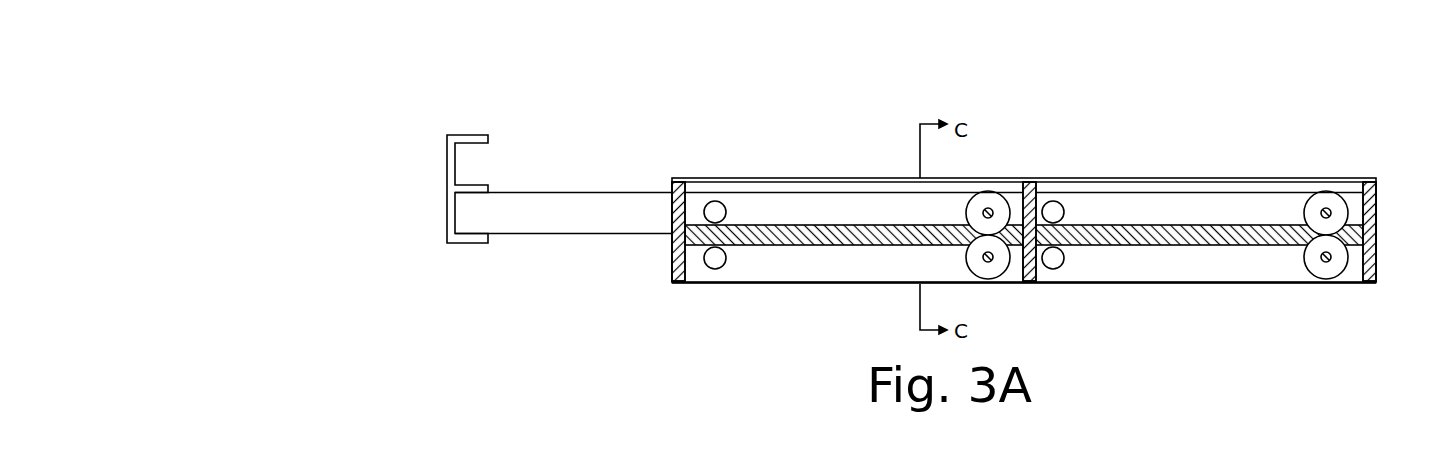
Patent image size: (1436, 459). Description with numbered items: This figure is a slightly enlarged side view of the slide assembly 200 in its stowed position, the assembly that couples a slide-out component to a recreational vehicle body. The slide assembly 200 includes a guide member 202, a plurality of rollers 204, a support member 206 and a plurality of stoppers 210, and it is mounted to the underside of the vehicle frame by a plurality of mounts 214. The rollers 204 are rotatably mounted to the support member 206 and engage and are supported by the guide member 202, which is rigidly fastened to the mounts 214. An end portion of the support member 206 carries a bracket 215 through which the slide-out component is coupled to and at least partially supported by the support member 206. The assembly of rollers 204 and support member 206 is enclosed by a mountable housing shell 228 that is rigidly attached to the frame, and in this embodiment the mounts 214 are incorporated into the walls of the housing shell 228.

The slide assembly 200 is at (1270, 100).
The guide member 202 is at (778, 233).
The rollers 204 is at (967, 213).
The support member 206 is at (510, 203).
The stoppers 210 is at (715, 212).
The mounts 214 is at (672, 282).
The bracket 215 is at (472, 141).
The housing shell 228 is at (745, 182).